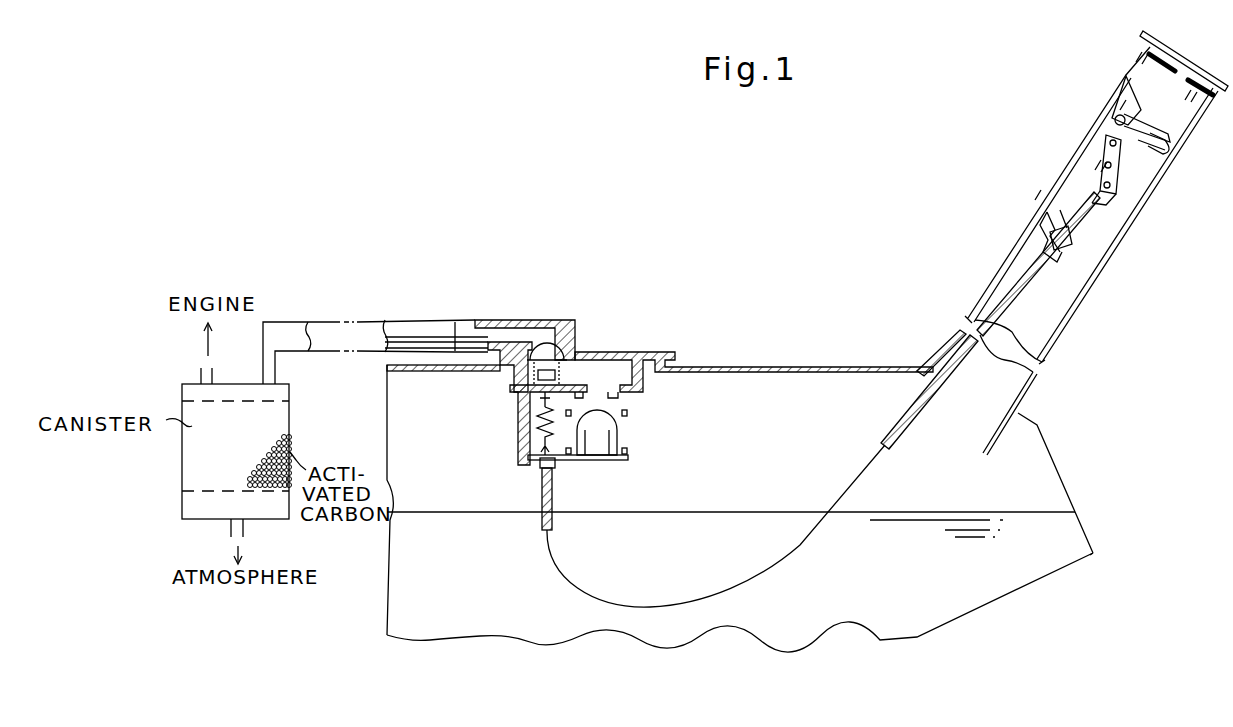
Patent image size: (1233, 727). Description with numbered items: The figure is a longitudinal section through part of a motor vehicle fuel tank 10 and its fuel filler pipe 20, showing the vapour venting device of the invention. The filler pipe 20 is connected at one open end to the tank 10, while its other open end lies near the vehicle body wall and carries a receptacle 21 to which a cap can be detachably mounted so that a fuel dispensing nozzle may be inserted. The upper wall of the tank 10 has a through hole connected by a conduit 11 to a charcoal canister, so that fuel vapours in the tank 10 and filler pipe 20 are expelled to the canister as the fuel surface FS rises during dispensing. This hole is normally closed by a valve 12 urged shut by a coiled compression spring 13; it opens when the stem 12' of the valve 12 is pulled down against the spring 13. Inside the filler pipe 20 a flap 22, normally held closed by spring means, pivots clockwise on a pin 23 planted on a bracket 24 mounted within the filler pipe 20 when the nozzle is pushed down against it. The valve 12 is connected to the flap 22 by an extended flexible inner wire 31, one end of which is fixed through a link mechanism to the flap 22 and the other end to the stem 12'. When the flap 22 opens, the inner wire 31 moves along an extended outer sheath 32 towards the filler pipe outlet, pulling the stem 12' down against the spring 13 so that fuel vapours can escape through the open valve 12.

The fuel tank 10 is at (794, 358).
The conduit 11 is at (419, 328).
The valve 12 is at (571, 341).
The stem 12' is at (528, 392).
The coiled compression spring 13 is at (558, 380).
The fuel filler pipe 20 is at (1032, 183).
The receptacle 21 is at (1186, 55).
The flap 22 is at (1172, 154).
The pin 23 is at (1116, 115).
The bracket 24 is at (1098, 173).
The flexible inner wire 31 is at (762, 580).
The outer sheath 32 is at (542, 490).
The fuel surface FS is at (714, 512).